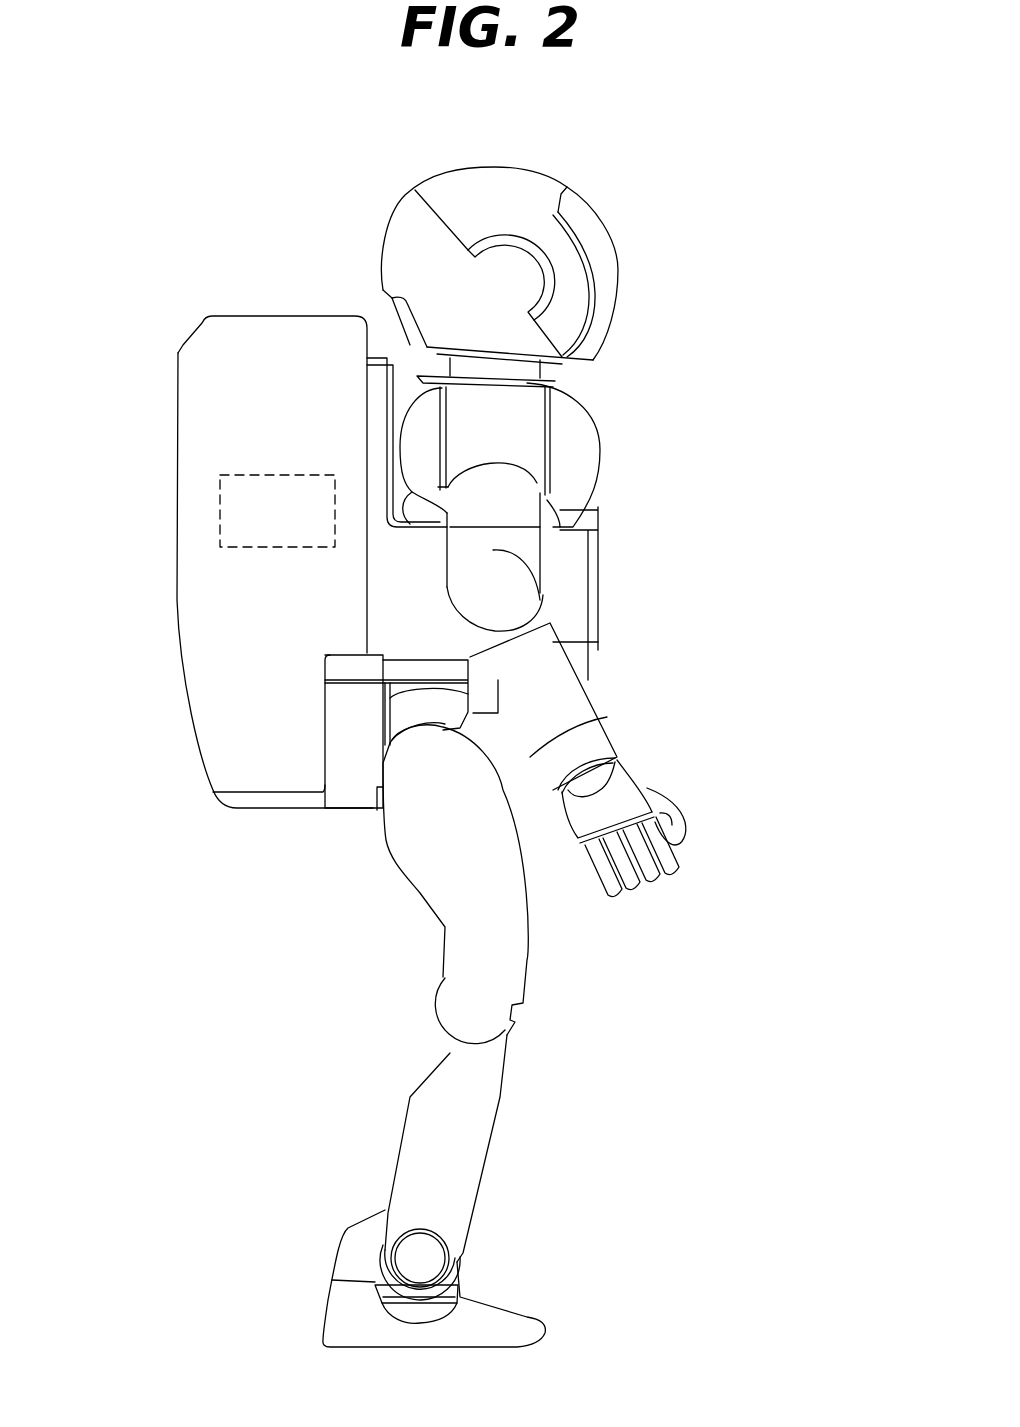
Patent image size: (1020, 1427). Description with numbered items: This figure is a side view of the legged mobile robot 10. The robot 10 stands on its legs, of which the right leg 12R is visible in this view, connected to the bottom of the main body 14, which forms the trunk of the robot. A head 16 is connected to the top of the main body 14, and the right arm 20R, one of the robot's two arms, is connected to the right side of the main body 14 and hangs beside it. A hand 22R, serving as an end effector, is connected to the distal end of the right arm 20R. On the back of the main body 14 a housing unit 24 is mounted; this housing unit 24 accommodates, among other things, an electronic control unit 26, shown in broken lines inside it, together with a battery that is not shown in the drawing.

The legged mobile robot 10 is at (652, 436).
The right leg 12R is at (550, 1026).
The main body 14 is at (577, 592).
The head 16 is at (452, 166).
The right arm 20R is at (614, 702).
The right hand 22R is at (640, 783).
The housing unit 24 is at (242, 316).
The electronic control unit (ECU) 26 is at (220, 508).